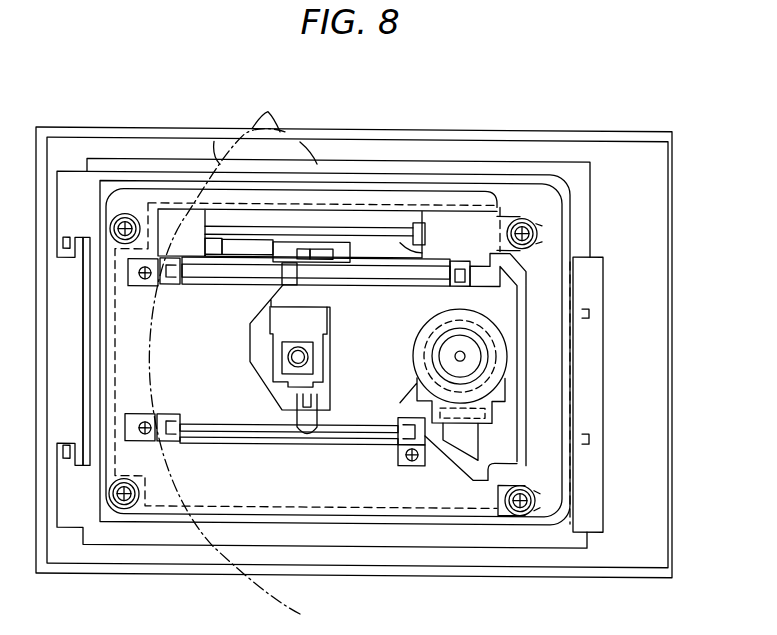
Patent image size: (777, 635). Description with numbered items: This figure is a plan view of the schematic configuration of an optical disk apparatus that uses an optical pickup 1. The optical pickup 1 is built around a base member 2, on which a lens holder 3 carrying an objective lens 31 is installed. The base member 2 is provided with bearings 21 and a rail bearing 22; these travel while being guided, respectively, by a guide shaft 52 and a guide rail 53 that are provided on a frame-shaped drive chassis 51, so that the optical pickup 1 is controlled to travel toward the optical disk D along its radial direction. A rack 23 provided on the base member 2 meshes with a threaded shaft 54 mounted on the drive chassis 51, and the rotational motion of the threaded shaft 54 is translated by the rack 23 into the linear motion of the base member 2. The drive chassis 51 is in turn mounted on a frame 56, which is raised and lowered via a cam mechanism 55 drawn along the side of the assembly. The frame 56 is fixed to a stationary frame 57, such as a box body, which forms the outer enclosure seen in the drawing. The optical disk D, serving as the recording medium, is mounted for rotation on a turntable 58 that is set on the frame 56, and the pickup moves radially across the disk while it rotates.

The optical pickup 1 is at (248, 299).
The base member 2 is at (346, 284).
The lens holder 3 is at (323, 352).
The bearings 21 is at (383, 273).
The rail bearing 22 is at (307, 431).
The rack 23 is at (338, 321).
The objective lens 31 is at (303, 362).
The drive chassis 51 is at (430, 513).
The guide shaft 52 is at (418, 273).
The guide rail 53 is at (381, 431).
The threaded shaft 54 is at (425, 245).
The cam mechanism 55 is at (603, 387).
The frame 56 is at (505, 158).
The stationary frame 57 is at (382, 128).
The turntable 58 is at (495, 345).
The optical disk D is at (221, 128).